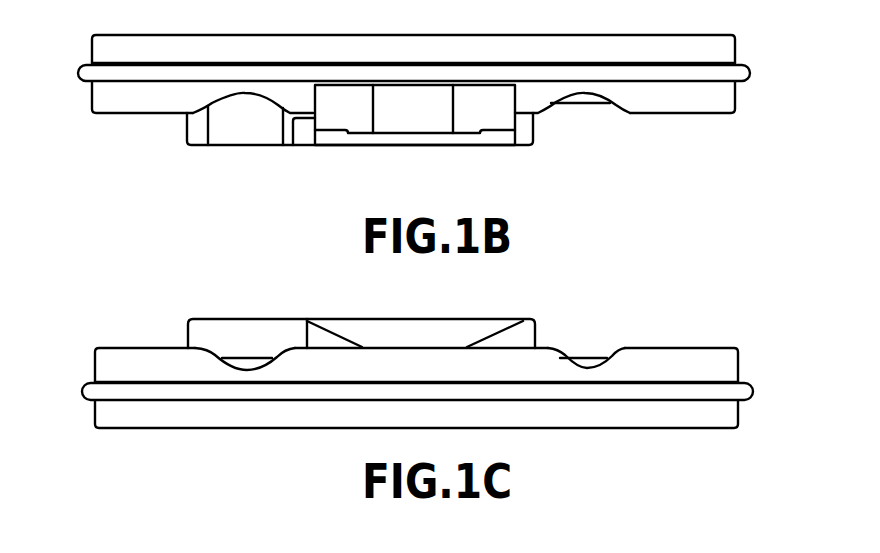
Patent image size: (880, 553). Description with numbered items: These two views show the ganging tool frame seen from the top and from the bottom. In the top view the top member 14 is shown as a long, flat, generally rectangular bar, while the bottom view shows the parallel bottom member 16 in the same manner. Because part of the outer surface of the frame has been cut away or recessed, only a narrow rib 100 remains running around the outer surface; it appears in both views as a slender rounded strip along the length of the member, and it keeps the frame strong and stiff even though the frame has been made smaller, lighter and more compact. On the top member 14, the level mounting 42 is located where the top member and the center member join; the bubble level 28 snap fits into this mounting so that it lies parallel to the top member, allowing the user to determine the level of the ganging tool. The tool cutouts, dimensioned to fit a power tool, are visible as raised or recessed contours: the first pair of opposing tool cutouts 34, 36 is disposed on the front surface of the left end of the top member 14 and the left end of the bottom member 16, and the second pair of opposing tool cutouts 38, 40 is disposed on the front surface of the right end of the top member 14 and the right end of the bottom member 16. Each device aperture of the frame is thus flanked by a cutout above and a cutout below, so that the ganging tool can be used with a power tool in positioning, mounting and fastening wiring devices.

In FIG. 1B, the top member 14 is at (443, 54).
In FIG. 1B, the rib 100 is at (751, 68).
In FIG. 1C, the rib 100 is at (82, 391).
In FIG. 1B, the tool cutout 38 is at (236, 95).
In FIG. 1B, the tool cutout 34 is at (580, 95).
In FIG. 1B, the level mounting 42 is at (325, 163).
In FIG. 1B, the bubble level 28 is at (412, 122).
In FIG. 1C, the tool cutout 40 is at (243, 370).
In FIG. 1C, the tool cutout 36 is at (584, 364).
In FIG. 1C, the bottom member 16 is at (525, 429).